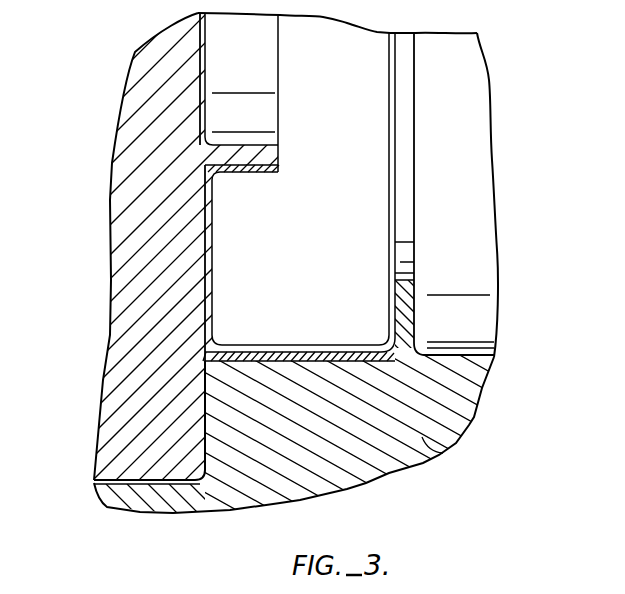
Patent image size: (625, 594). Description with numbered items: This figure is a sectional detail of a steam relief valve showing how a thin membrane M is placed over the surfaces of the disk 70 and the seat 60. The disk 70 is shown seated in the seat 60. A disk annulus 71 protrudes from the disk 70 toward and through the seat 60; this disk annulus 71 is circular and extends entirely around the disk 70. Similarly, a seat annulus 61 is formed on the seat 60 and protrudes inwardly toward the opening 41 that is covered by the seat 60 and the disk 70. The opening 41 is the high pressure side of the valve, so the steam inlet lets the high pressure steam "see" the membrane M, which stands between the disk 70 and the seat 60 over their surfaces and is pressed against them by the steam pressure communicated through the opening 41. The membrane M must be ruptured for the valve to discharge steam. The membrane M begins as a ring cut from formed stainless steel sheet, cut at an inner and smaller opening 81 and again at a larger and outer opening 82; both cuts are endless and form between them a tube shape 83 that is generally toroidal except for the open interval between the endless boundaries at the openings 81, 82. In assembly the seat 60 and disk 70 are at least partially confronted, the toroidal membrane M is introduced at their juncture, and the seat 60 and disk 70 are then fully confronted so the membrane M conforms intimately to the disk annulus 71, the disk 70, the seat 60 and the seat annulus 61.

The disk 70 is at (118, 370).
The seat 60 is at (442, 459).
The disk annulus 71 is at (247, 143).
The opening 41 is at (338, 237).
The inner opening 81 is at (280, 171).
The membrane M is at (213, 268).
The tube shape 83 is at (293, 360).
The outer opening 82 is at (396, 282).
The seat annulus 61 is at (417, 329).